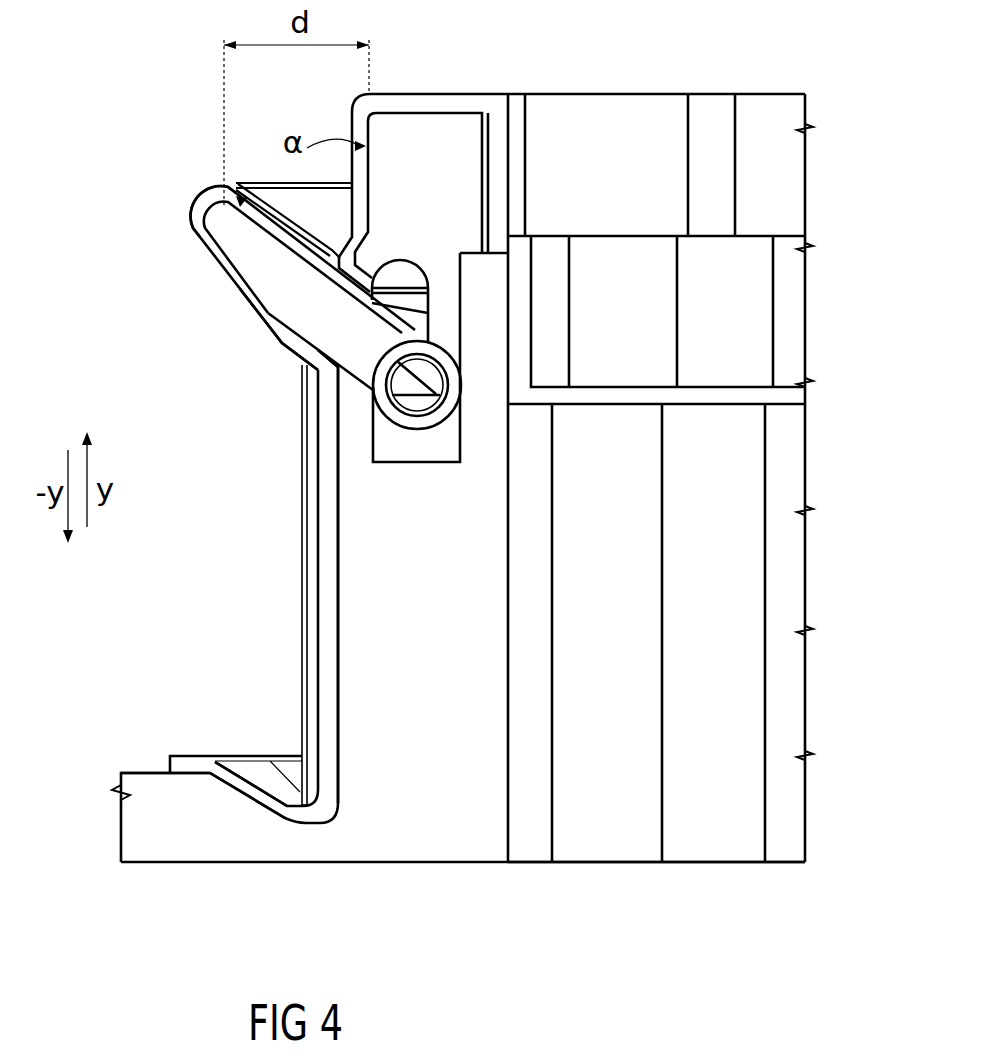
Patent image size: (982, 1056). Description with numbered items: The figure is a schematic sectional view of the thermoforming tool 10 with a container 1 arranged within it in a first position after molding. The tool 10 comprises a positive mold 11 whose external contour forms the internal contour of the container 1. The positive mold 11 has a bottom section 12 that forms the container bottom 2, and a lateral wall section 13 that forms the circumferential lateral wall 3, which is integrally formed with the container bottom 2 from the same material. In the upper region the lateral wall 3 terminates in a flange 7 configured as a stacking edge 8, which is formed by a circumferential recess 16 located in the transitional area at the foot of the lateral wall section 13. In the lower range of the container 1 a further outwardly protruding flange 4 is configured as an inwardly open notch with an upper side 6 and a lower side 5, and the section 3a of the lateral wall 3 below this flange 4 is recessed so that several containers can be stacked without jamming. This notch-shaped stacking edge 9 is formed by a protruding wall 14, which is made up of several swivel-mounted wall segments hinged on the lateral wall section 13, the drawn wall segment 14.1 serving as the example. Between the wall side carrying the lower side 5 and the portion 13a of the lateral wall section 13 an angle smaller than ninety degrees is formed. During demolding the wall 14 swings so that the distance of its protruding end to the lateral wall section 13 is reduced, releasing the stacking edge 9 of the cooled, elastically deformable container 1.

The container 1 is at (330, 578).
The container bottom 2 is at (800, 396).
The lateral wall 3 is at (325, 497).
The section of the lateral wall 3a is at (352, 122).
The flange 4 is at (263, 267).
The lower side 5 is at (277, 227).
The upper side 6 is at (285, 325).
The flange 7 is at (177, 759).
The stacking edge 8 is at (180, 765).
The stacking edge 9 is at (203, 202).
The tool 10 is at (733, 825).
The positive mold 11 is at (620, 830).
The bottom section 12 is at (757, 475).
The lateral wall section 13 is at (350, 642).
The portion of the lateral wall section 13a is at (438, 133).
The wall 14 is at (234, 489).
The wall segment 14.1 is at (320, 327).
The circumferential recess 16 is at (240, 772).